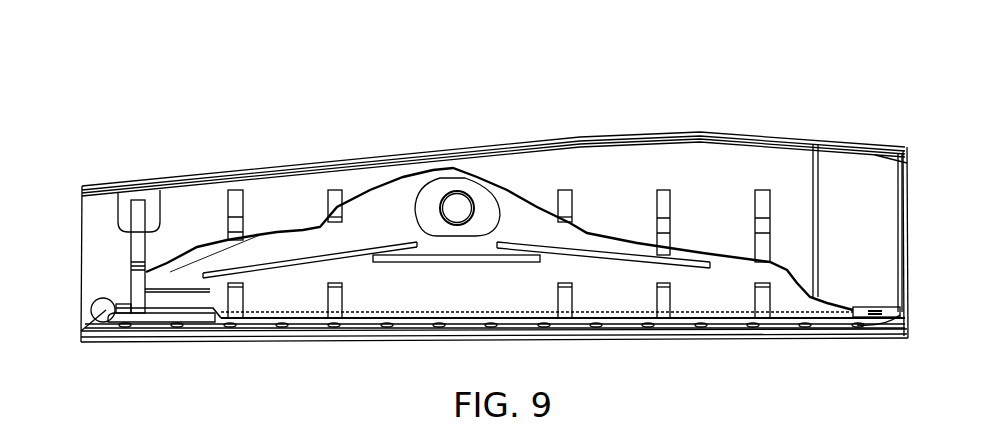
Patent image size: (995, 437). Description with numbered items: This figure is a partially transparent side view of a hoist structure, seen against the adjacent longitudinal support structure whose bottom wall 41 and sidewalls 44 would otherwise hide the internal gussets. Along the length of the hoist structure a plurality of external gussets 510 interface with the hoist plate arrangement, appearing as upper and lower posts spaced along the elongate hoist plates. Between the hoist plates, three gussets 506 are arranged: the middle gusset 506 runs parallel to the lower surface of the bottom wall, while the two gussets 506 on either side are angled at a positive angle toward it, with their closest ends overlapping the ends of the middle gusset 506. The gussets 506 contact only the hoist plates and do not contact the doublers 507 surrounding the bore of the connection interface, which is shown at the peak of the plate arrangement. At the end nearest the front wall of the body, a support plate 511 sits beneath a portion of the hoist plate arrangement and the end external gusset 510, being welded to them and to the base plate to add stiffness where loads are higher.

The bottom wall 41 is at (583, 135).
The sidewalls 44 is at (720, 173).
The gussets 506 is at (278, 263).
The doublers 507 is at (455, 178).
The external gussets 510 is at (142, 220).
The support plate 511 is at (138, 317).